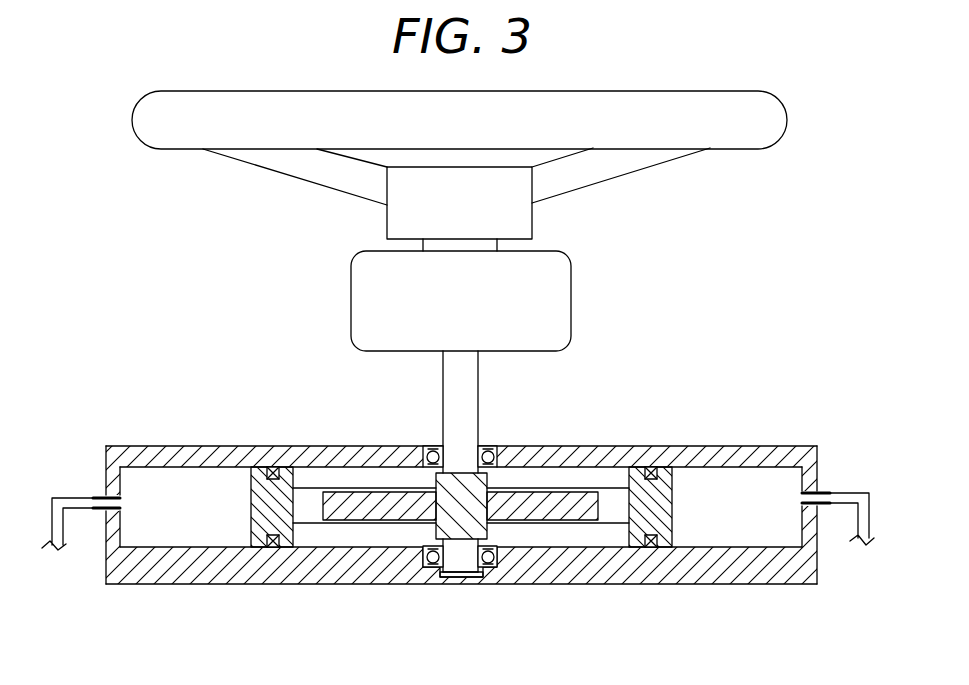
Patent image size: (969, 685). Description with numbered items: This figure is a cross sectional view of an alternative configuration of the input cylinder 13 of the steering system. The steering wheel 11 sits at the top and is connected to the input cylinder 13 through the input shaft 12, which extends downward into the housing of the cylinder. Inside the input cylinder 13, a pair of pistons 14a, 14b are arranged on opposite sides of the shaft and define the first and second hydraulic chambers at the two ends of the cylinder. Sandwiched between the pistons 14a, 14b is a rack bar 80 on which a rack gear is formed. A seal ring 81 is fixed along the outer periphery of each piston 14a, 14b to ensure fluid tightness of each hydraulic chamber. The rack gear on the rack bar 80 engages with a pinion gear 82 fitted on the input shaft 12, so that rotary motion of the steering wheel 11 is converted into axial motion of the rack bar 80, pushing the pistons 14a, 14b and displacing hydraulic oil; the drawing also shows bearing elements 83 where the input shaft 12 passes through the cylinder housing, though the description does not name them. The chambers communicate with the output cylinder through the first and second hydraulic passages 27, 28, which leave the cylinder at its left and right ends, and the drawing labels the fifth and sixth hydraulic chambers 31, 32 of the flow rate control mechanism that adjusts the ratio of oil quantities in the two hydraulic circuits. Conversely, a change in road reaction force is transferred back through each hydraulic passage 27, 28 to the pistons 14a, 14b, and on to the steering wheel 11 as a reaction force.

The steering wheel 11 is at (212, 133).
The input shaft 12 is at (452, 385).
The input cylinder 13 is at (461, 521).
The piston 14a is at (257, 480).
The piston 14b is at (668, 475).
The first hydraulic passage 27 is at (78, 498).
The second hydraulic passage 28 is at (850, 493).
The fifth hydraulic chamber 31 is at (130, 584).
The sixth hydraulic chamber 32 is at (785, 584).
The rack bar 80 is at (342, 521).
The seal ring 81 is at (274, 468).
The pinion gear 82 is at (490, 528).
The ball bearing 83 is at (494, 446).